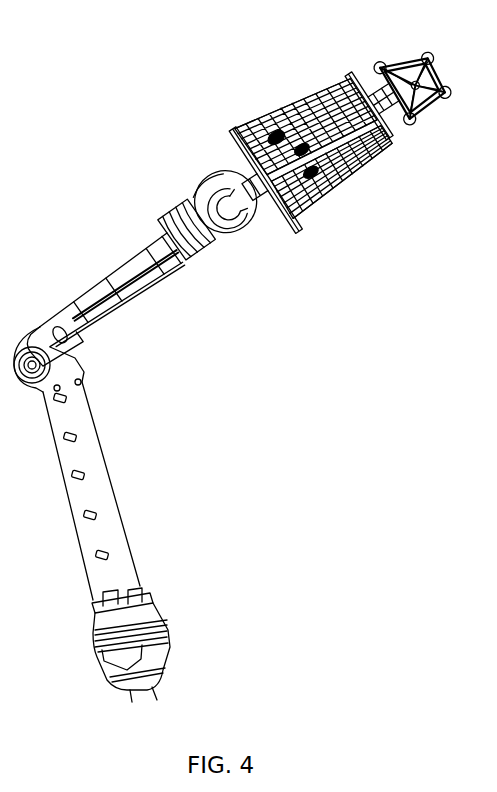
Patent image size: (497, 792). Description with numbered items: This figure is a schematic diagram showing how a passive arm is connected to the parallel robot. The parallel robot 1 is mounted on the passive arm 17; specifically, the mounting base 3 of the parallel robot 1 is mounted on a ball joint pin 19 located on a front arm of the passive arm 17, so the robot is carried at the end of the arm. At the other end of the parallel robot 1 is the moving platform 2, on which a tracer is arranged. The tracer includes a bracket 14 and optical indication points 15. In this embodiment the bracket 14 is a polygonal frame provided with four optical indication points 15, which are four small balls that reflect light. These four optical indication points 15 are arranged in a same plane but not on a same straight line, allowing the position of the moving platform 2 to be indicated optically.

The parallel robot 1 is at (278, 100).
The moving platform 2 is at (348, 73).
The mounting base 3 is at (247, 155).
The bracket 14 is at (395, 60).
The optical indication points 15 is at (425, 53).
The passive arm 17 is at (127, 277).
The ball joint pin 19 is at (257, 197).